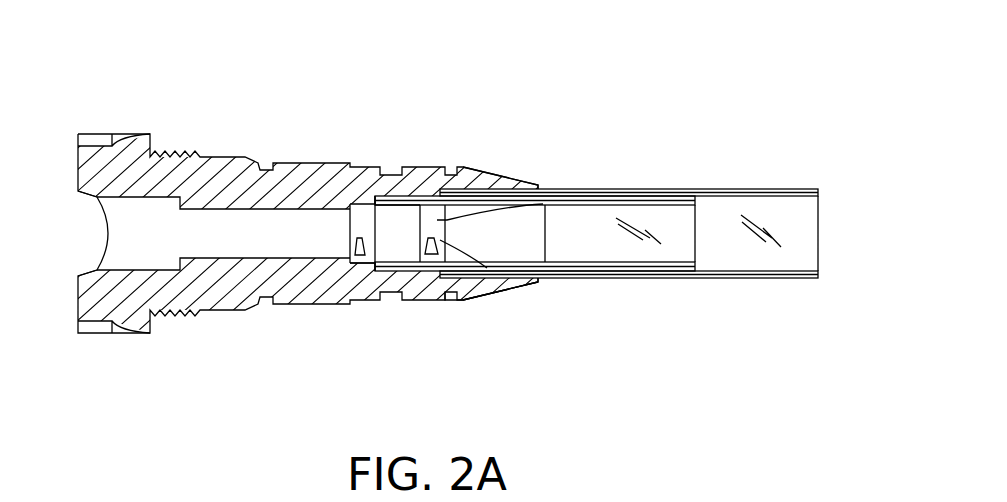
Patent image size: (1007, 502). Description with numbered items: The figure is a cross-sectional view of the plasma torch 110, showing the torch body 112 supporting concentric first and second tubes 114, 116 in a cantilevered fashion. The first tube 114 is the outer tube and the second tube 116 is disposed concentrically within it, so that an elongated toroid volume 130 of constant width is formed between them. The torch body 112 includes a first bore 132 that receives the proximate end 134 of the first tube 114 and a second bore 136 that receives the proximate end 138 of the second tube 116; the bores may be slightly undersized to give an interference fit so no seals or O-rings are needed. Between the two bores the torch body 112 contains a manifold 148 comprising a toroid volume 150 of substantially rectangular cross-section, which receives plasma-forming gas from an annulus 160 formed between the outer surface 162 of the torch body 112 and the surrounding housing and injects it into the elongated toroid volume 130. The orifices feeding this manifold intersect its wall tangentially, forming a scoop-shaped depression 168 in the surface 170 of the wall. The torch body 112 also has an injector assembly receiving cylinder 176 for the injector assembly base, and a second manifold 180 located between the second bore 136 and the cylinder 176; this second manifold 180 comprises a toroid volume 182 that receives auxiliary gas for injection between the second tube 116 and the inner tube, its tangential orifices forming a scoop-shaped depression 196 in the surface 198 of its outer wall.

The plasma torch 110 is at (677, 117).
The torch body 112 is at (303, 162).
The first tube 114 is at (763, 189).
The second tube 116 is at (658, 189).
The elongated toroid volume 130 is at (622, 189).
The first bore 132 is at (497, 207).
The proximate end of the first tube 134 is at (457, 188).
The second bore 136 is at (402, 215).
The proximate end of the second tube 138 is at (390, 198).
The manifold 148 is at (450, 288).
The toroid volume 150 is at (428, 256).
The annulus 160 is at (599, 493).
The outer surface of the torch body 162 is at (215, 156).
The scoop-shaped depression 168 is at (487, 268).
The surface of the outer wall 170 is at (573, 190).
The injector assembly receiving cylinder 176 is at (265, 163).
The second manifold 180 is at (368, 263).
The toroid volume 182 is at (350, 266).
The scoop-shaped depression 196 is at (353, 247).
The surface of the outer wall 198 is at (350, 220).